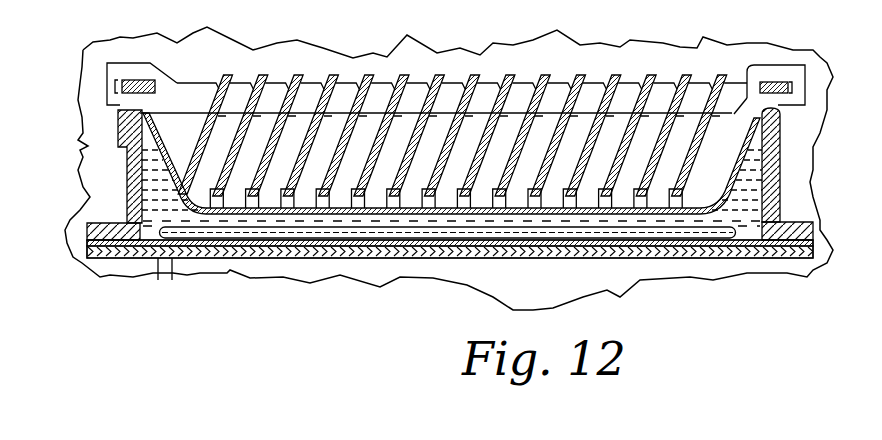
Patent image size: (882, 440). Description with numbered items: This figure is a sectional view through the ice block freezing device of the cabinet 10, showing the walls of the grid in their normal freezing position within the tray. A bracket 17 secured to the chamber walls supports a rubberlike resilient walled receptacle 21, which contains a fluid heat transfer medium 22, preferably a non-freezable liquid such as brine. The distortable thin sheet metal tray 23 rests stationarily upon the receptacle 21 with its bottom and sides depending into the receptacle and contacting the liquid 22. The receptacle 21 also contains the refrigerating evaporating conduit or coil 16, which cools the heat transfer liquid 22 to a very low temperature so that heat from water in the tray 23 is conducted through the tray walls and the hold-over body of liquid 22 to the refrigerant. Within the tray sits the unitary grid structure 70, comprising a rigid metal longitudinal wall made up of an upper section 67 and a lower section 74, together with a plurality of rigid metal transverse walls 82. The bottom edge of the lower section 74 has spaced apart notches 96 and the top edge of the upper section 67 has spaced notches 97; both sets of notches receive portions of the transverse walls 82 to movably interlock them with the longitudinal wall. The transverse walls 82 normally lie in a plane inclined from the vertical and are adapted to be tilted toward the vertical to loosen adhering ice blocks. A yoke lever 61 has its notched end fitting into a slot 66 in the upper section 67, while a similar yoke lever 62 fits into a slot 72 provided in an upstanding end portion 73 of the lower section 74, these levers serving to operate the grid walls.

The cabinet 10 is at (80, 87).
The refrigerating evaporating conduit 16 is at (284, 258).
The bracket 17 is at (571, 249).
The resilient walled receptacle 21 is at (779, 158).
The fluid heat transfer medium 22 is at (779, 190).
The tray 23 is at (137, 183).
The yoke lever 61 is at (134, 80).
The yoke lever 62 is at (774, 81).
The slot 66 is at (146, 86).
The upper section 67 is at (244, 90).
The unitary grid structure 70 is at (351, 92).
The slot 72 is at (788, 81).
The upstanding end portion 73 is at (807, 72).
The lower section 74 is at (731, 133).
The transverse walls 82 is at (480, 83).
The notches 96 is at (511, 203).
The notches 97 is at (624, 85).